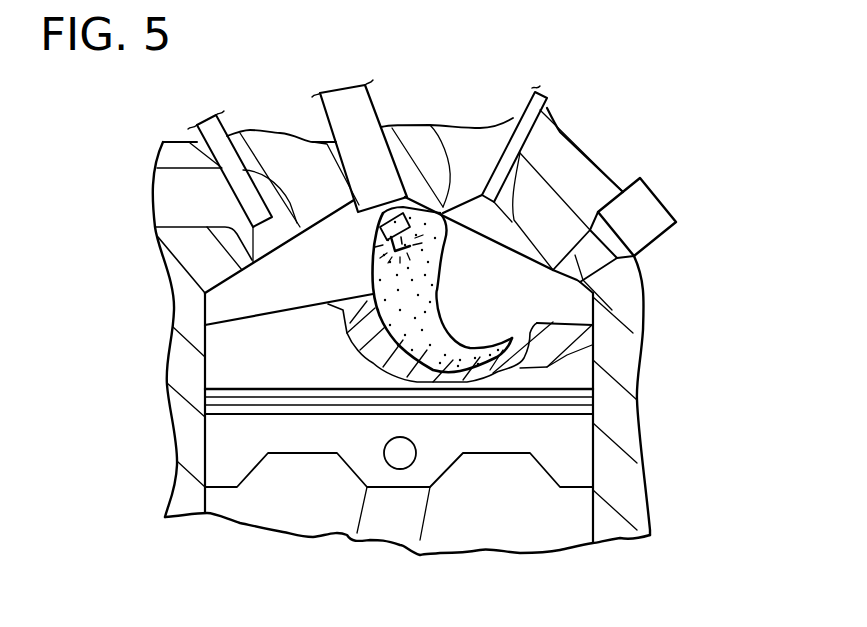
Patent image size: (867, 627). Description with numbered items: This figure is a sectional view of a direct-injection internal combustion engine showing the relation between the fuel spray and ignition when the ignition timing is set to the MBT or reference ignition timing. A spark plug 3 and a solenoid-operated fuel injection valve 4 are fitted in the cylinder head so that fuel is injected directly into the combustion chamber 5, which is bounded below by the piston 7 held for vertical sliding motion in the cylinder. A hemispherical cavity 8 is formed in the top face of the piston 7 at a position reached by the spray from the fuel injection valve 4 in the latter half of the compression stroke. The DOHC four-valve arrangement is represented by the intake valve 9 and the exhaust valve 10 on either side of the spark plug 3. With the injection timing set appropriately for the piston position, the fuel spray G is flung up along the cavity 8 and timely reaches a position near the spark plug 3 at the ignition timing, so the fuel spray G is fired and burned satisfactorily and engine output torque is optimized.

The spark plug 3 is at (367, 112).
The fuel injection valve 4 is at (643, 233).
The combustion chamber 5 is at (240, 294).
The piston 7 is at (303, 440).
The cavity 8 is at (545, 330).
The intake valve 9 is at (547, 98).
The exhaust valve 10 is at (225, 132).
The fuel spray G is at (373, 280).